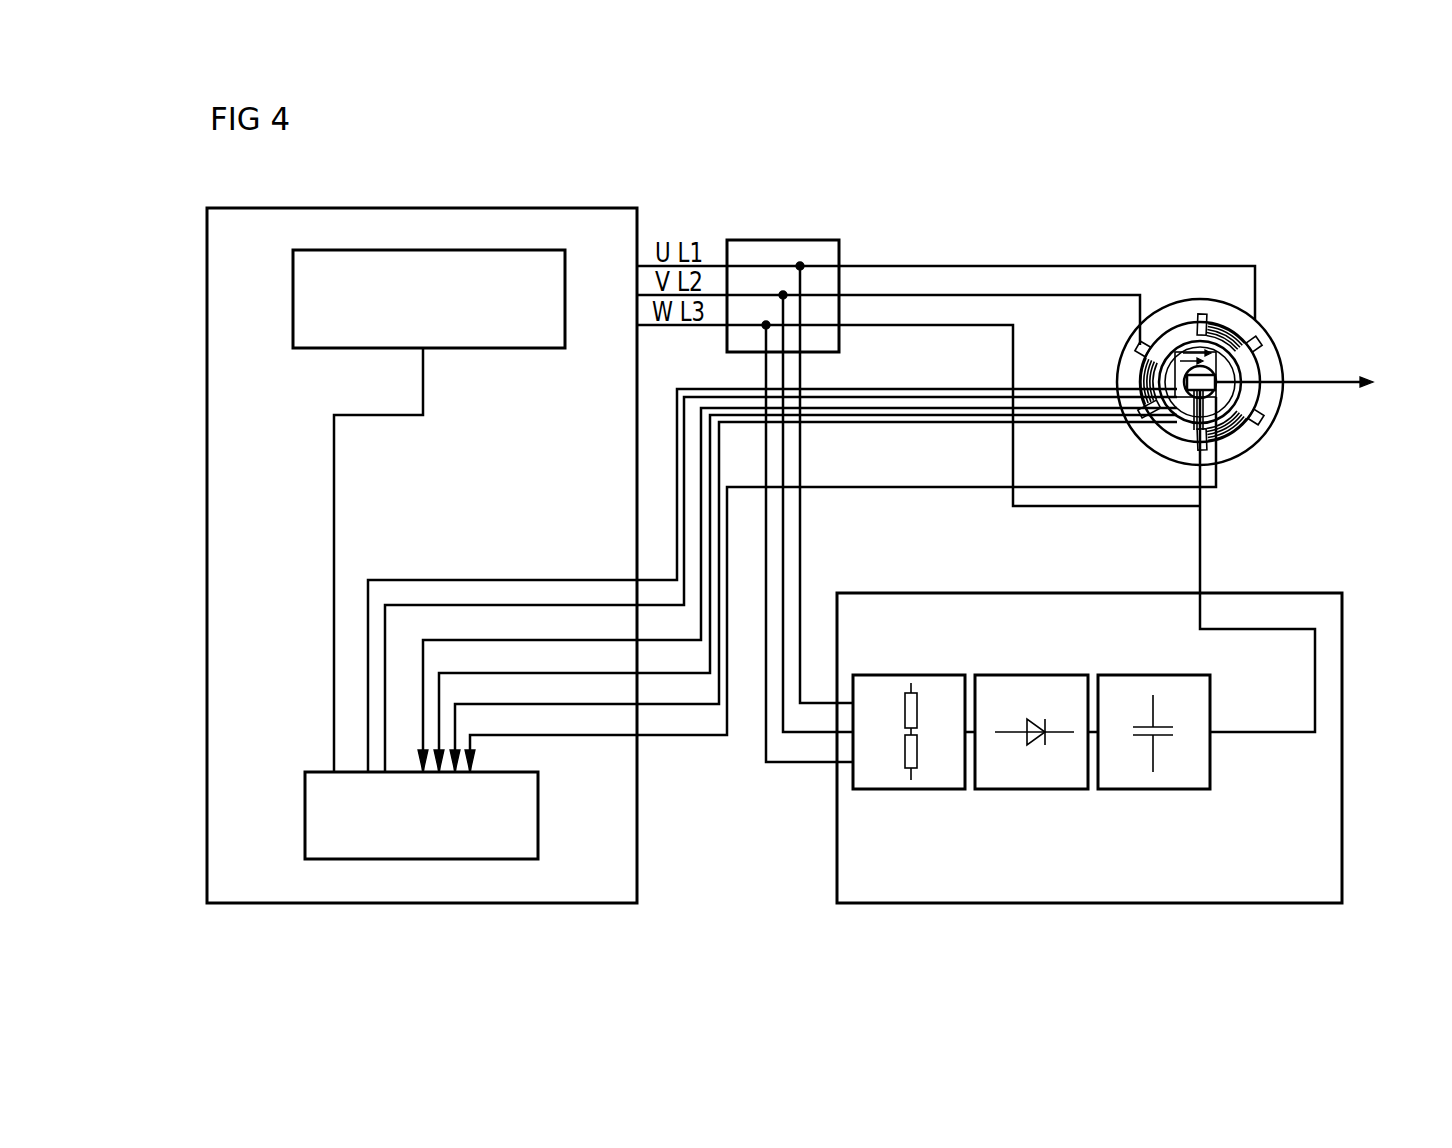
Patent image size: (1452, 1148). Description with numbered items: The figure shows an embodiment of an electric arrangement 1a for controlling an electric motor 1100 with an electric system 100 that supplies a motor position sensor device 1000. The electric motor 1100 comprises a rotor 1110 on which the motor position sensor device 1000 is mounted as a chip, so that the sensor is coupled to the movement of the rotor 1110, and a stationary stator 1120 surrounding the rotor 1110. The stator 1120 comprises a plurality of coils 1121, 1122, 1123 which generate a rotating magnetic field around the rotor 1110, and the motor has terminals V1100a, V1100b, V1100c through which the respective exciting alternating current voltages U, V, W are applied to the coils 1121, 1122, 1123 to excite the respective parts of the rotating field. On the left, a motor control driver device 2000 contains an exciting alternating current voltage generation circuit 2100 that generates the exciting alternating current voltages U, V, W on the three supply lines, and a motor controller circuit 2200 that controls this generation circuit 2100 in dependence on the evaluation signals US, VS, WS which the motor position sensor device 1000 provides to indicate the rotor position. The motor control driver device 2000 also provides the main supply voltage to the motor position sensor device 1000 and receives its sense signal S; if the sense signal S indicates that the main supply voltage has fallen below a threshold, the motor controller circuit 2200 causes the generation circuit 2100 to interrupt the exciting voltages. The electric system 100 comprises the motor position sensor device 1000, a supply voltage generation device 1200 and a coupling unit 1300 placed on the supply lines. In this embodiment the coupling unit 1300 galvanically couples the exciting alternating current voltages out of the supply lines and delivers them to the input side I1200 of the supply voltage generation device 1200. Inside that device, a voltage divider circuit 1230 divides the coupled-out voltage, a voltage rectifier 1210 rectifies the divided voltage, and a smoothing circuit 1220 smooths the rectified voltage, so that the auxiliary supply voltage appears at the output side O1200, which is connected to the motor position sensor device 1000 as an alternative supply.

The electric arrangement 1a is at (960, 142).
The electric system 100 is at (1265, 172).
The motor position sensor device 1000 is at (1205, 378).
The electric motor 1100 is at (1193, 357).
The rotor 1110 is at (1190, 384).
The stator 1120 is at (1196, 312).
The coil 1121 is at (1262, 400).
The coil 1122 is at (1168, 328).
The coil 1123 is at (1158, 437).
The terminal V1100a is at (1255, 345).
The terminal V1100b is at (1130, 352).
The terminal V1100c is at (1215, 465).
The supply voltage generation device 1200 is at (1050, 591).
The input side I1200 is at (833, 767).
The output side O1200 is at (1205, 590).
The voltage rectifier 1210 is at (1032, 680).
The smoothing circuit 1220 is at (1152, 680).
The voltage divider circuit 1230 is at (912, 680).
The coupling unit 1300 is at (783, 240).
The motor control driver device 2000 is at (468, 553).
The exciting alternating current voltage generation circuit 2100 is at (565, 333).
The motor controller circuit 2200 is at (538, 817).